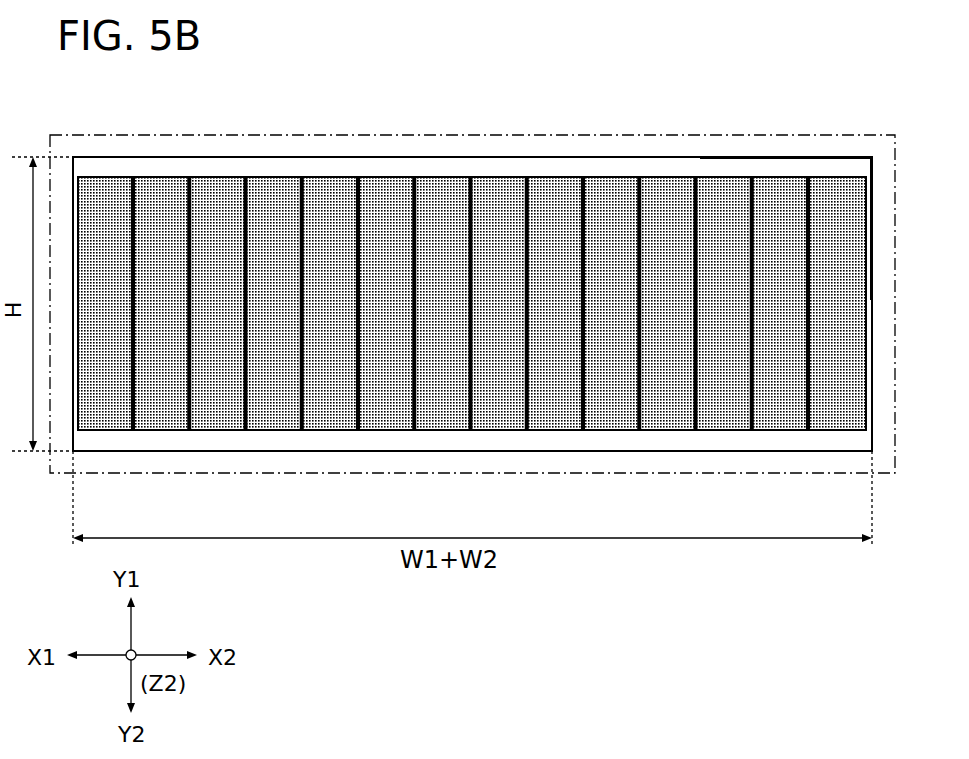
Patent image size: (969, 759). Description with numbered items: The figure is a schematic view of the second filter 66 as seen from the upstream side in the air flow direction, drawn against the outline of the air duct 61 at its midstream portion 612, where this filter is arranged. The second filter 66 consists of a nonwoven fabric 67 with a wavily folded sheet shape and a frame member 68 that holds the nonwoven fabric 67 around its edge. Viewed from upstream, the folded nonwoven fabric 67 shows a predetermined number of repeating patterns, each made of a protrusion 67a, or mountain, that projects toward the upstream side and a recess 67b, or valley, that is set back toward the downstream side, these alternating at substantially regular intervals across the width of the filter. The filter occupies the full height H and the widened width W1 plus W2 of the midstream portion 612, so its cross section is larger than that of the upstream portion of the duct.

The air duct 61 is at (472, 261).
The midstream portion 612 is at (585, 128).
The second filter 66 is at (272, 150).
The nonwoven fabric 67 is at (164, 196).
The protrusion 67a is at (135, 407).
The recess 67b is at (192, 408).
The frame member 68 is at (763, 168).